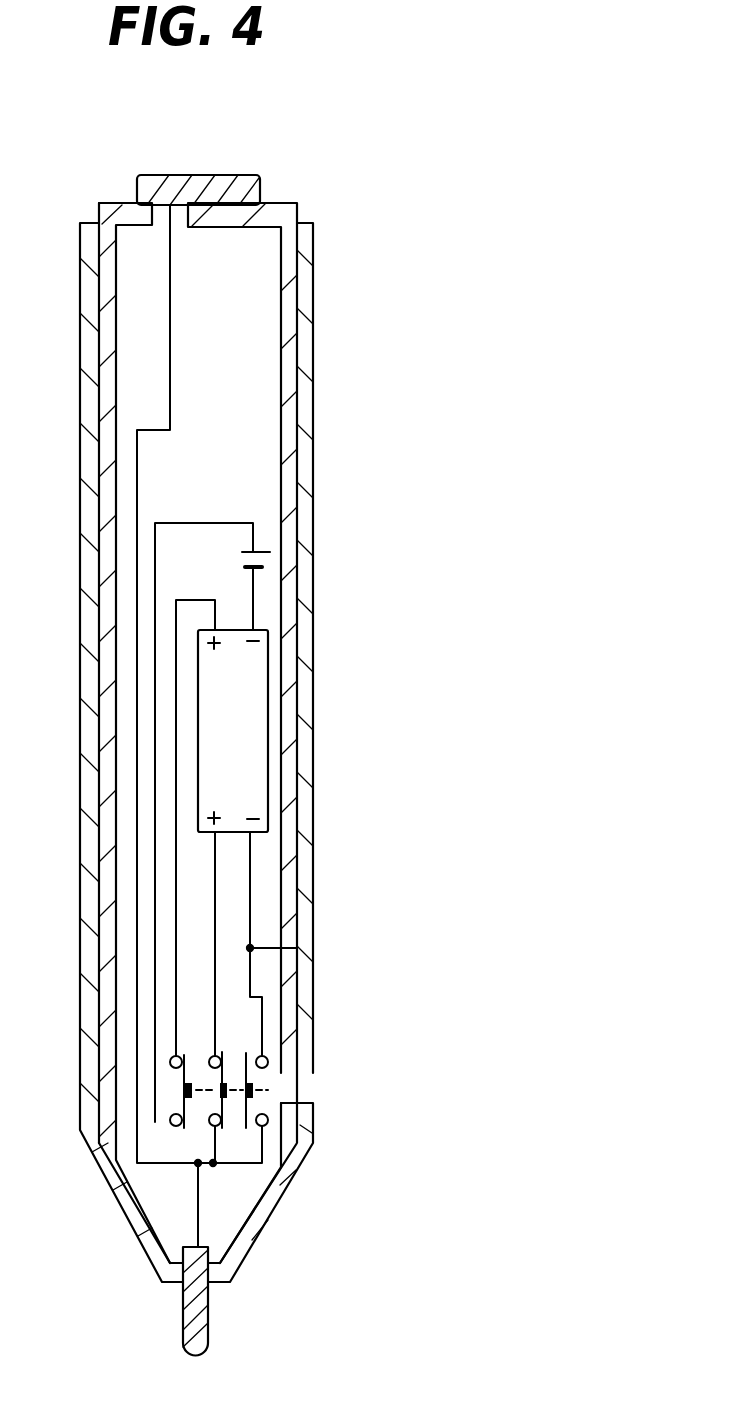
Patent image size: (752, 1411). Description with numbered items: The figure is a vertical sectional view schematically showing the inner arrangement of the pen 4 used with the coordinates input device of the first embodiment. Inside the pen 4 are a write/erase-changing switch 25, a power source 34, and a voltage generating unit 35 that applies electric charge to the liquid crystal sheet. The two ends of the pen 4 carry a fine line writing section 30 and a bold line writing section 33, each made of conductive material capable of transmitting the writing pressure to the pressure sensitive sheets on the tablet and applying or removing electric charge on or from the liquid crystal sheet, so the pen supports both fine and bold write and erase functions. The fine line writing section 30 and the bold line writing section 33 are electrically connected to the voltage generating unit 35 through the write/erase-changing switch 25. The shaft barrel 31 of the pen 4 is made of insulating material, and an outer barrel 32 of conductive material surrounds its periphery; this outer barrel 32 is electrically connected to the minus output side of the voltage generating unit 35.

The pen 4 is at (340, 549).
The write/erase-changing switch 25 is at (272, 1088).
The fine line writing section 30 is at (212, 1337).
The shaft barrel 31 is at (287, 771).
The outer barrel 32 is at (302, 862).
The bold line writing section 33 is at (228, 184).
The power source 34 is at (265, 552).
The voltage generating unit 35 is at (256, 689).